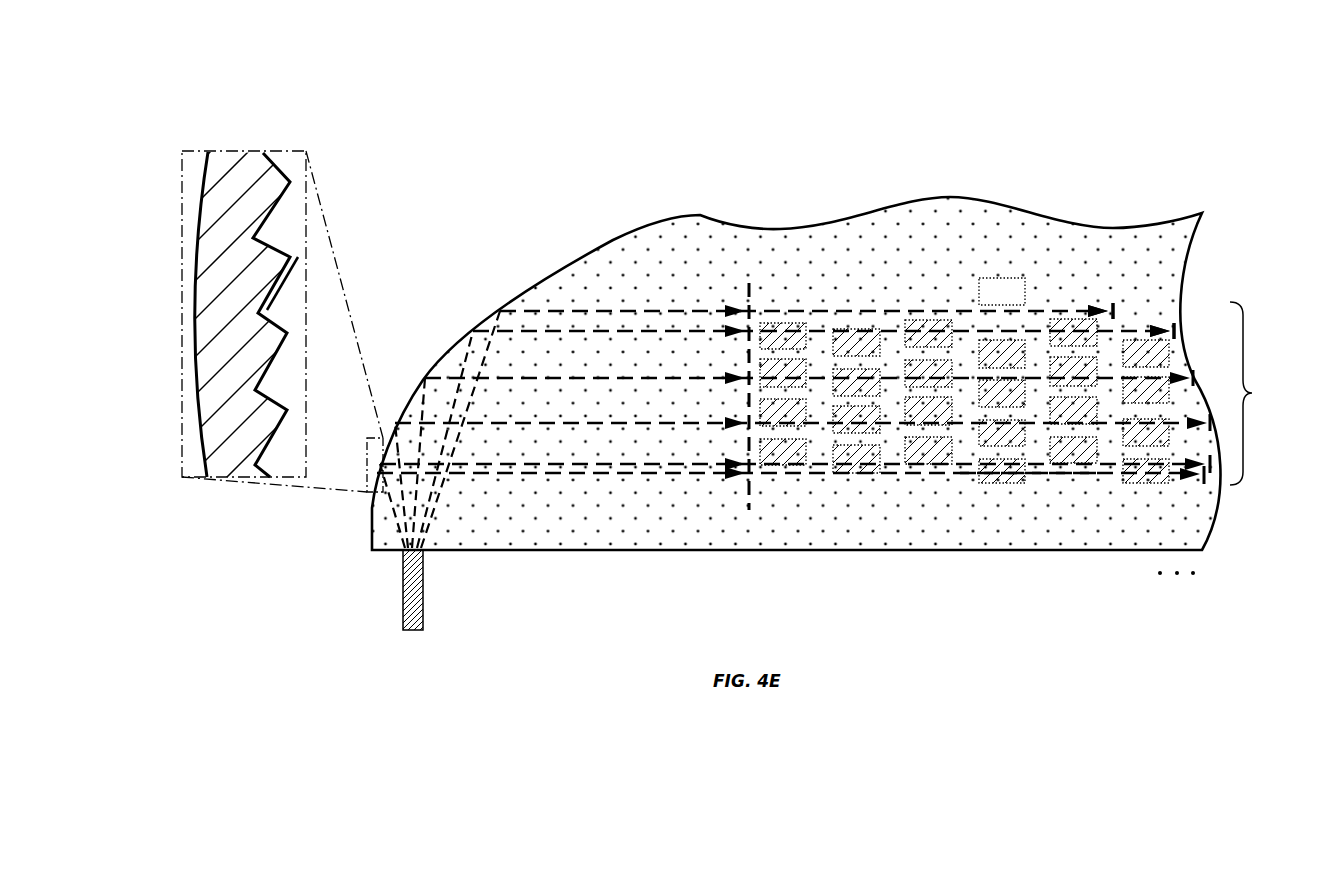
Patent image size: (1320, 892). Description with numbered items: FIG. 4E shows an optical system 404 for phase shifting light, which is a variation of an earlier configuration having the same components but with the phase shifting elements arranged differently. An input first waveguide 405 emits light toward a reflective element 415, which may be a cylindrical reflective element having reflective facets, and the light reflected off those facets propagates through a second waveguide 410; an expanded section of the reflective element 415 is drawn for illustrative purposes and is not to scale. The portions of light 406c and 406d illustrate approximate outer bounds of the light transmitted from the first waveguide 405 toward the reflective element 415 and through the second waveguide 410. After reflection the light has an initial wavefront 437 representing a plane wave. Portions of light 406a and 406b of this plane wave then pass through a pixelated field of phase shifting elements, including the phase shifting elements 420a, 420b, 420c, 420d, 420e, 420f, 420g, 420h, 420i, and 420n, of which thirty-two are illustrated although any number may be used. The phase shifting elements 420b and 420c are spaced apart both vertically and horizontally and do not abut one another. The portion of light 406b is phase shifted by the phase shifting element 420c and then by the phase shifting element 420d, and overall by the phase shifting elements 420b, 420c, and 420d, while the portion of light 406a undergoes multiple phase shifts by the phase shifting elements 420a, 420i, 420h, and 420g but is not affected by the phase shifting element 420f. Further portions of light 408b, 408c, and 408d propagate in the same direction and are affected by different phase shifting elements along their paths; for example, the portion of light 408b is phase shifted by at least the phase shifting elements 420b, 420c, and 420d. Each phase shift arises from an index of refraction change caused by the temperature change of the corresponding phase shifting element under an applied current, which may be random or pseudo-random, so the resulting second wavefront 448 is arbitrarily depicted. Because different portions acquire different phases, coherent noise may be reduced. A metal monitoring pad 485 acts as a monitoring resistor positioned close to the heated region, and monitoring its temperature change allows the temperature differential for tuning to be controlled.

The optical system 404 is at (1136, 98).
The first waveguide 405 is at (424, 577).
The portion of light 406a is at (568, 470).
The portion of light 406b is at (563, 330).
The portion of light 406c is at (632, 474).
The portion of light 406d is at (603, 310).
The portion of light 408b is at (1138, 327).
The portion of light 408c is at (960, 475).
The portion of light 408d is at (1090, 305).
The second waveguide 410 is at (413, 410).
The reflective element 415 is at (520, 296).
The phase shifting element 420a is at (770, 466).
The phase shifting element 420b is at (778, 322).
The phase shifting element 420c is at (856, 329).
The phase shifting element 420d is at (915, 320).
The phase shifting element 420e is at (760, 370).
The phase shifting element 420f is at (1050, 441).
The phase shifting element 420g is at (1003, 485).
The phase shifting element 420h is at (923, 465).
The phase shifting element 420i is at (848, 474).
The phase shifting element 420n is at (1147, 484).
The initial wavefront 437 is at (748, 283).
The second wavefront 448 is at (1260, 393).
The metal monitoring pad 485 is at (1000, 278).